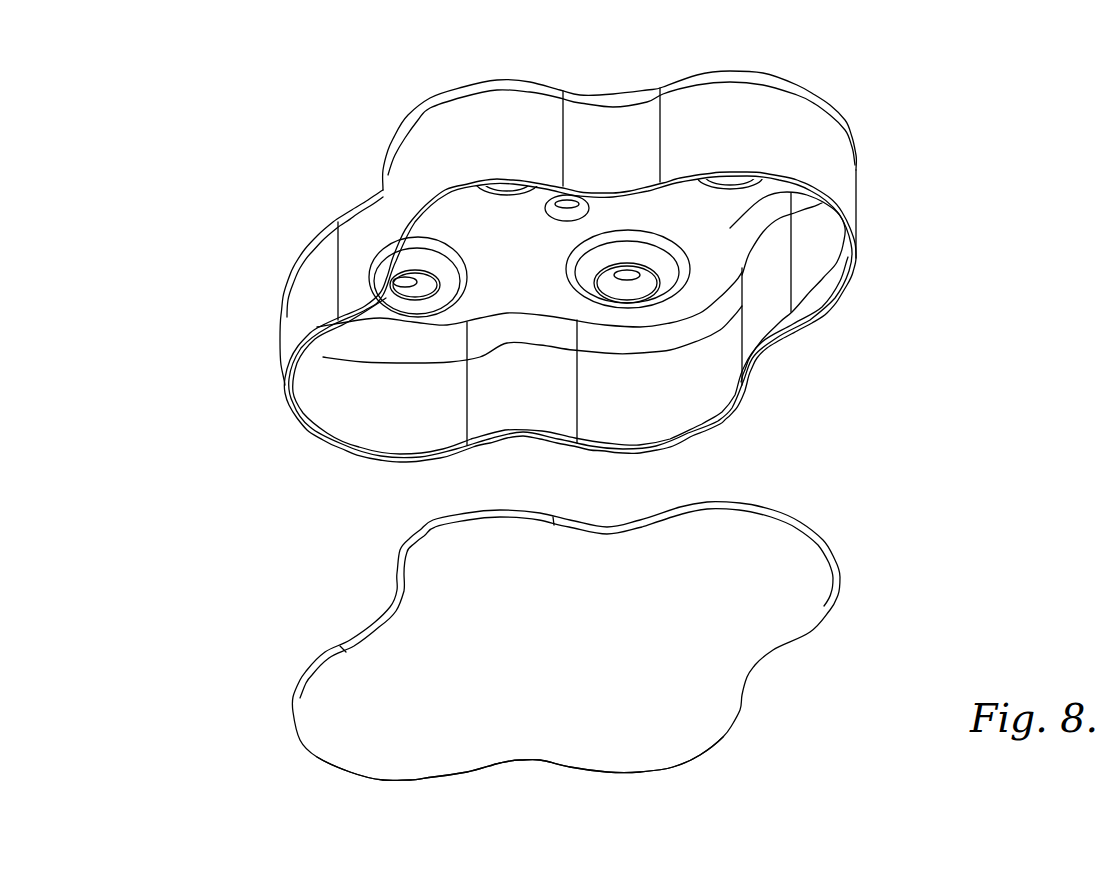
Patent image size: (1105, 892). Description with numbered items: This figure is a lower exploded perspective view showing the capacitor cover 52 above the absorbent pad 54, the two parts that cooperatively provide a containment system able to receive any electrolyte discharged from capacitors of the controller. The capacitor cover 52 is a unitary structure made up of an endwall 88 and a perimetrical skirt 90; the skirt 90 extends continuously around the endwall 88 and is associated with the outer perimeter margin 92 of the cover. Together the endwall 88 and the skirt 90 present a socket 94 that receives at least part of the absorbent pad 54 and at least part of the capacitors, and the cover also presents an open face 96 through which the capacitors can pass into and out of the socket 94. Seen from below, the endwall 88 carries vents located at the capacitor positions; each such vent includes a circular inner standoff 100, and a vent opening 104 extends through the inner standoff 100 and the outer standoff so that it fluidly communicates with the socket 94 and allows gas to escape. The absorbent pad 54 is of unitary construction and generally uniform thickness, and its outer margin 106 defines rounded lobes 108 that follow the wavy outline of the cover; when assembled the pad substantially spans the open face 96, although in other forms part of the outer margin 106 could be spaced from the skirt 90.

The capacitor cover 52 is at (782, 102).
The absorbent pad 54 is at (745, 528).
The endwall 88 is at (528, 280).
The perimetrical skirt 90 is at (486, 120).
The outer perimeter margin 92 is at (287, 318).
The socket 94 is at (317, 387).
The open face 96 is at (843, 290).
The circular inner standoff 100 is at (390, 317).
The vent opening 104 is at (410, 283).
The outer margin 106 is at (520, 762).
The rounded lobes 108 is at (430, 537).